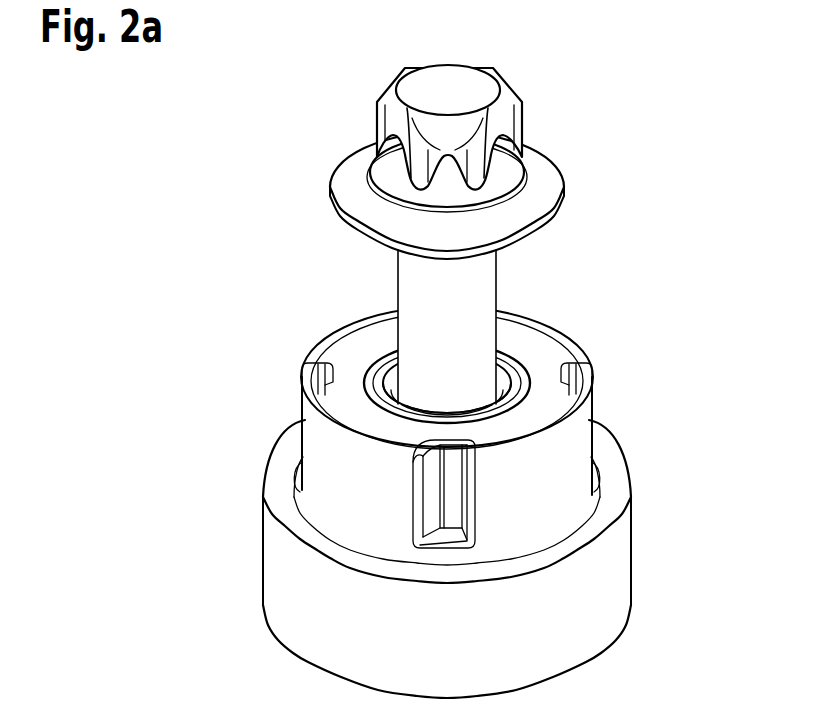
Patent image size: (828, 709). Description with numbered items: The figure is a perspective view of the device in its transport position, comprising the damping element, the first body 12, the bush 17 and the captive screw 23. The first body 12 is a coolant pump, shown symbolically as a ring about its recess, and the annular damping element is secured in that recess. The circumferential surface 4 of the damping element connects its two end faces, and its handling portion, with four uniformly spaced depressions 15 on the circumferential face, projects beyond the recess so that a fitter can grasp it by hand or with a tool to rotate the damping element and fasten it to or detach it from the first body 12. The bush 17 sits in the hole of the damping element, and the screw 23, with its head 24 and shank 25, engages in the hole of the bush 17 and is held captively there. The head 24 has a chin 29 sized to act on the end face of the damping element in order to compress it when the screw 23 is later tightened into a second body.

The circumferential surface 4 is at (336, 497).
The first body 12 is at (607, 571).
The depressions 15 is at (306, 383).
The bush 17 is at (514, 372).
The screw 23 is at (467, 220).
The head 24 is at (507, 123).
The shank 25 is at (414, 287).
The chin 29 is at (538, 242).